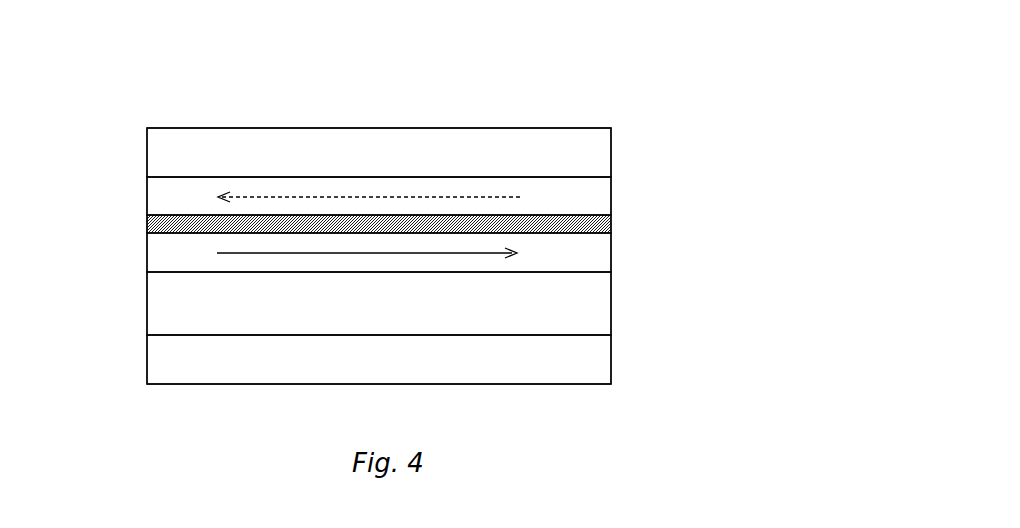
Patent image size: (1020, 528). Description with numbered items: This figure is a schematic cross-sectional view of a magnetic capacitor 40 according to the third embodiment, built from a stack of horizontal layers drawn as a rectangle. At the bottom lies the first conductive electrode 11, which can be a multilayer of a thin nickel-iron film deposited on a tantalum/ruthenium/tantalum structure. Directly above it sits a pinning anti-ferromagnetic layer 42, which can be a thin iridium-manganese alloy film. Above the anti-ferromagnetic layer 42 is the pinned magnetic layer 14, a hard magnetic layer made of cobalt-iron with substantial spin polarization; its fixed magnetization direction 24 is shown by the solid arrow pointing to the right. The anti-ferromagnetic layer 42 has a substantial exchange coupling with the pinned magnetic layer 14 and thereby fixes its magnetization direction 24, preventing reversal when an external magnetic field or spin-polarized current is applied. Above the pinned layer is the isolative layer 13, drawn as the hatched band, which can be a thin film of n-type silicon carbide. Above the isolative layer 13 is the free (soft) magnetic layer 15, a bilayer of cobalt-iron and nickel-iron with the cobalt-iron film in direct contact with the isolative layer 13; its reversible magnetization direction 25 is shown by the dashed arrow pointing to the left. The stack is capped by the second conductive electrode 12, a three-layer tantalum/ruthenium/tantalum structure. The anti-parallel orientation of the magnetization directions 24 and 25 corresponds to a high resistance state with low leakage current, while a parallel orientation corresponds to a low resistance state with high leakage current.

The magnetic capacitor 40 is at (637, 95).
The second conductive electrode 12 is at (611, 143).
The free (soft) magnetic layer 15 is at (611, 188).
The isolative layer 13 is at (611, 224).
The pinned magnetic layer 14 is at (611, 261).
The pinning anti-ferromagnetic layer 42 is at (611, 308).
The first conductive electrode 11 is at (611, 367).
The reversible magnetization direction 25 is at (348, 197).
The fixed magnetization direction 24 is at (280, 254).